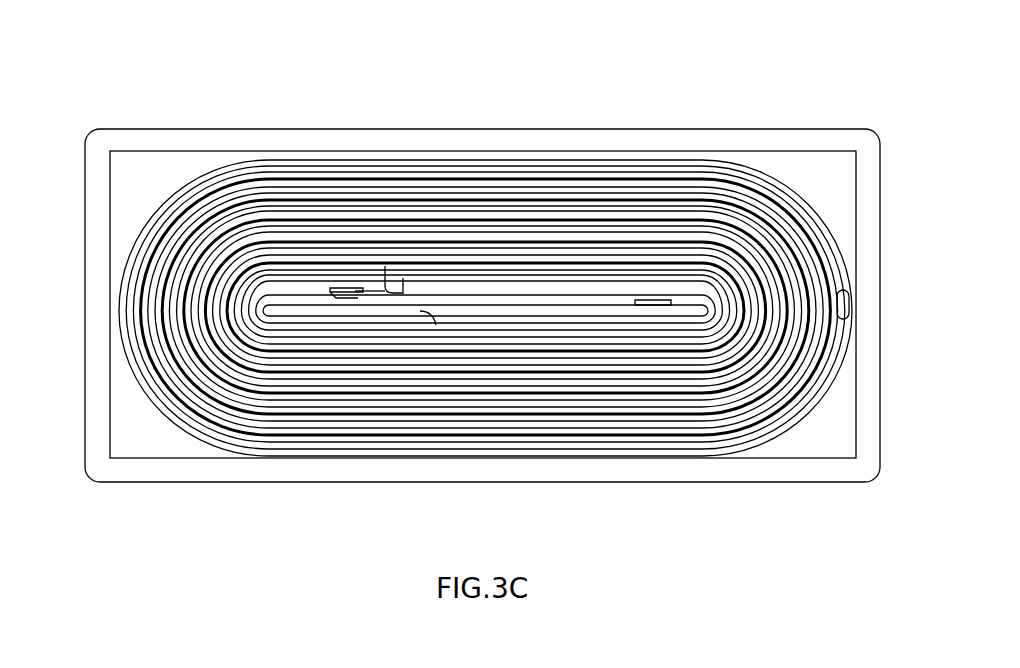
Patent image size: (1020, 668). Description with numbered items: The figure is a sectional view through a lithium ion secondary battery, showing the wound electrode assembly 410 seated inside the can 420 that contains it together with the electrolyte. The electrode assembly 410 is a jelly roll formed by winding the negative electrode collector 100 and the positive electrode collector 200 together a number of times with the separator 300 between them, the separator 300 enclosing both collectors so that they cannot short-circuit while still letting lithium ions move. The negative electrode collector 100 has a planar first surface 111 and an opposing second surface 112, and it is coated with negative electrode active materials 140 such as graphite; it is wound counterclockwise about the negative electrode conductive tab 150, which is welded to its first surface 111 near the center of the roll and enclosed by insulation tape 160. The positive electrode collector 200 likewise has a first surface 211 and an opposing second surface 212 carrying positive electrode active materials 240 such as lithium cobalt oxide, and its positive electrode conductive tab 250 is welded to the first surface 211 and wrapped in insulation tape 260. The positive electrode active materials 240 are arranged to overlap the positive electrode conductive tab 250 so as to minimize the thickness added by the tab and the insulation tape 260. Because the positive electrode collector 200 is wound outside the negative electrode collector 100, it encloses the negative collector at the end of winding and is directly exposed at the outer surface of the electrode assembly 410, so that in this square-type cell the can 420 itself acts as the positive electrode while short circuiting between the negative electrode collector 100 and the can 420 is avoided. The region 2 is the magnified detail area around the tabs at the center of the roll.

The region 2 is at (426, 317).
The negative electrode collector 100 is at (683, 290).
The first surface 111 is at (697, 277).
The second surface 112 is at (668, 293).
The negative electrode active materials 140 is at (537, 302).
The negative electrode conductive tab 150 is at (800, 340).
The insulation tape 160 is at (838, 308).
The positive electrode collector 200 is at (393, 268).
The first surface 211 is at (382, 285).
The second surface 212 is at (350, 283).
The positive electrode active materials 240 is at (471, 327).
The positive electrode conductive tab 250 is at (345, 287).
The insulation tape 260 is at (330, 290).
The separator 300 is at (605, 295).
The electrode assembly 410 is at (800, 165).
The can 420 is at (860, 124).